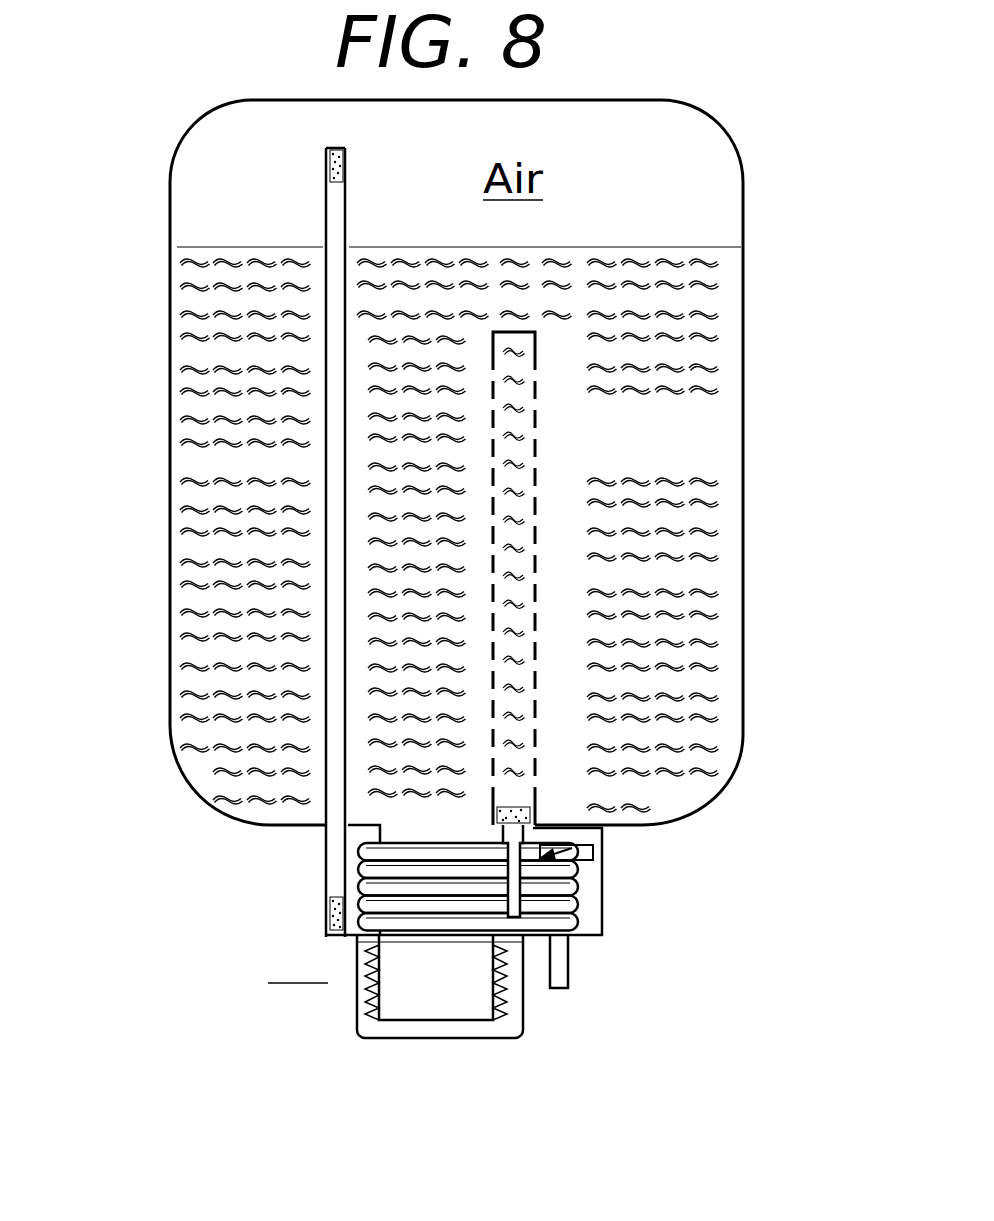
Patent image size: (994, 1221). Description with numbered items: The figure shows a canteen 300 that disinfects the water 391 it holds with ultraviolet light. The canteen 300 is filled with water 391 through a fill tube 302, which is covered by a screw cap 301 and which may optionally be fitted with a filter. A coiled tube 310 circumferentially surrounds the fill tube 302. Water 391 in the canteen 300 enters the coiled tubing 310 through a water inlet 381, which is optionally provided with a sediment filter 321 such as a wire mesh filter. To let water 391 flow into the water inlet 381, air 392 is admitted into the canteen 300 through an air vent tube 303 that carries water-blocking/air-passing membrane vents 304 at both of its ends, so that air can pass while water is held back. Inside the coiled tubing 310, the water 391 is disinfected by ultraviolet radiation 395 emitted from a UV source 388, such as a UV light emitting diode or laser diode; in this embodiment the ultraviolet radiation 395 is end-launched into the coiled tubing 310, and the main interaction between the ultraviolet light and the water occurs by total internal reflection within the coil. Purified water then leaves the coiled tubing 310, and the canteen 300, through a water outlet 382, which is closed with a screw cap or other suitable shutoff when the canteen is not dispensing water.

The canteen 300 is at (743, 200).
The screw cap 301 is at (428, 1040).
The fill tube 302 is at (412, 1010).
The air vent tube 303 is at (326, 210).
The water-blocking/air-passing membrane vents 304 is at (326, 156).
The coiled tube 310 is at (362, 872).
The sediment filter 321 is at (535, 618).
The water inlet 381 is at (597, 829).
The water outlet 382 is at (568, 988).
The UV source 388 is at (592, 857).
The water 391 is at (562, 437).
The air 392 is at (210, 1022).
The ultraviolet radiation 395 is at (582, 867).